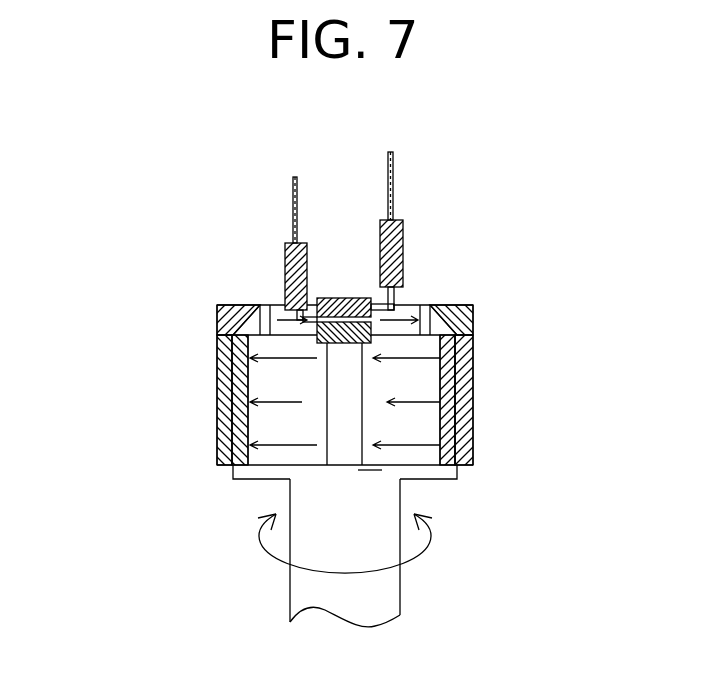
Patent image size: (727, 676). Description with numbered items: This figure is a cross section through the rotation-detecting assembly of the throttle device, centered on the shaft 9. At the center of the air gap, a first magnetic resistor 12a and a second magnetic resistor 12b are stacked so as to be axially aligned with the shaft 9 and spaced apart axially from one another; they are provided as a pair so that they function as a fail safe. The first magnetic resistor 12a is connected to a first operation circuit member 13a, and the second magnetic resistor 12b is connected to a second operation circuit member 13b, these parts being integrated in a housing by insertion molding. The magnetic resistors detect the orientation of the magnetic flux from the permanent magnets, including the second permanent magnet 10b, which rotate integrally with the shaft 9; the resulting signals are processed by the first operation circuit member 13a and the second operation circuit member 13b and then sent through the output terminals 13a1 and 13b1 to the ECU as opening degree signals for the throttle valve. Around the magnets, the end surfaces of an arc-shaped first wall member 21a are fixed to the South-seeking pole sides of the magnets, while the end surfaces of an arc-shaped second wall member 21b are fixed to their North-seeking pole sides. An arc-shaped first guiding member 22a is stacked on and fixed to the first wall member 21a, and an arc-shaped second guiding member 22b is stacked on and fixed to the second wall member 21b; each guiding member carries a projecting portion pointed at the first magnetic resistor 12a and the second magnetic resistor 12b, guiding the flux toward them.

The shaft 9 is at (377, 593).
The second permanent magnet 10b is at (339, 442).
The first magnetic resistor 12a is at (348, 298).
The second magnetic resistor 12b is at (373, 332).
The first operation circuit member 13a is at (405, 260).
The second operation circuit member 13b is at (285, 275).
The output terminal 13a1 is at (393, 190).
The output terminal 13b1 is at (293, 200).
The first wall member 21a is at (473, 400).
The second wall member 21b is at (217, 405).
The first guiding member 22a is at (473, 322).
The second guiding member 22b is at (217, 322).